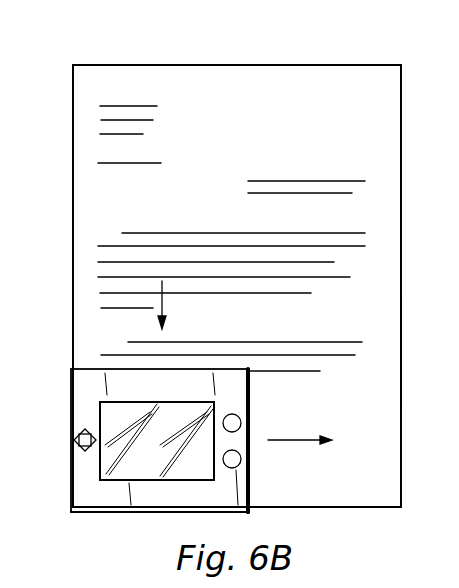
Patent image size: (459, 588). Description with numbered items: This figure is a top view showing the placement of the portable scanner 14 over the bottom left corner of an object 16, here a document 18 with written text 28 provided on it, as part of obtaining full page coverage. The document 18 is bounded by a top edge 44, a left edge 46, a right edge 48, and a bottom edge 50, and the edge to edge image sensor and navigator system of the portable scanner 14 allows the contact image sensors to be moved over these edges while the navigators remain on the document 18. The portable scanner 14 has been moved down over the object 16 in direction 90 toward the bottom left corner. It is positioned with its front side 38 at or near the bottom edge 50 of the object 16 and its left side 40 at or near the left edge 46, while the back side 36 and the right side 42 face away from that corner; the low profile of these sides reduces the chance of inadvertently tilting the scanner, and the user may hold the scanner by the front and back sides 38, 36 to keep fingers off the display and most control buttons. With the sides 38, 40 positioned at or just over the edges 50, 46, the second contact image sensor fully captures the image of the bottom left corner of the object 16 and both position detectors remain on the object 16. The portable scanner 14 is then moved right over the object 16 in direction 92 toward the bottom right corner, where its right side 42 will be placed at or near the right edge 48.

The portable scanner 14 is at (210, 356).
The object 16 is at (408, 217).
The document 18 is at (401, 345).
The written text 28 is at (270, 371).
The back side 36 is at (137, 368).
The front side 38 is at (110, 512).
The left side 40 is at (70, 485).
The right side 42 is at (250, 478).
The top edge 44 is at (284, 65).
The left edge 46 is at (72, 350).
The right edge 48 is at (402, 475).
The bottom edge 50 is at (372, 507).
The direction 90 is at (161, 301).
The direction 92 is at (297, 438).